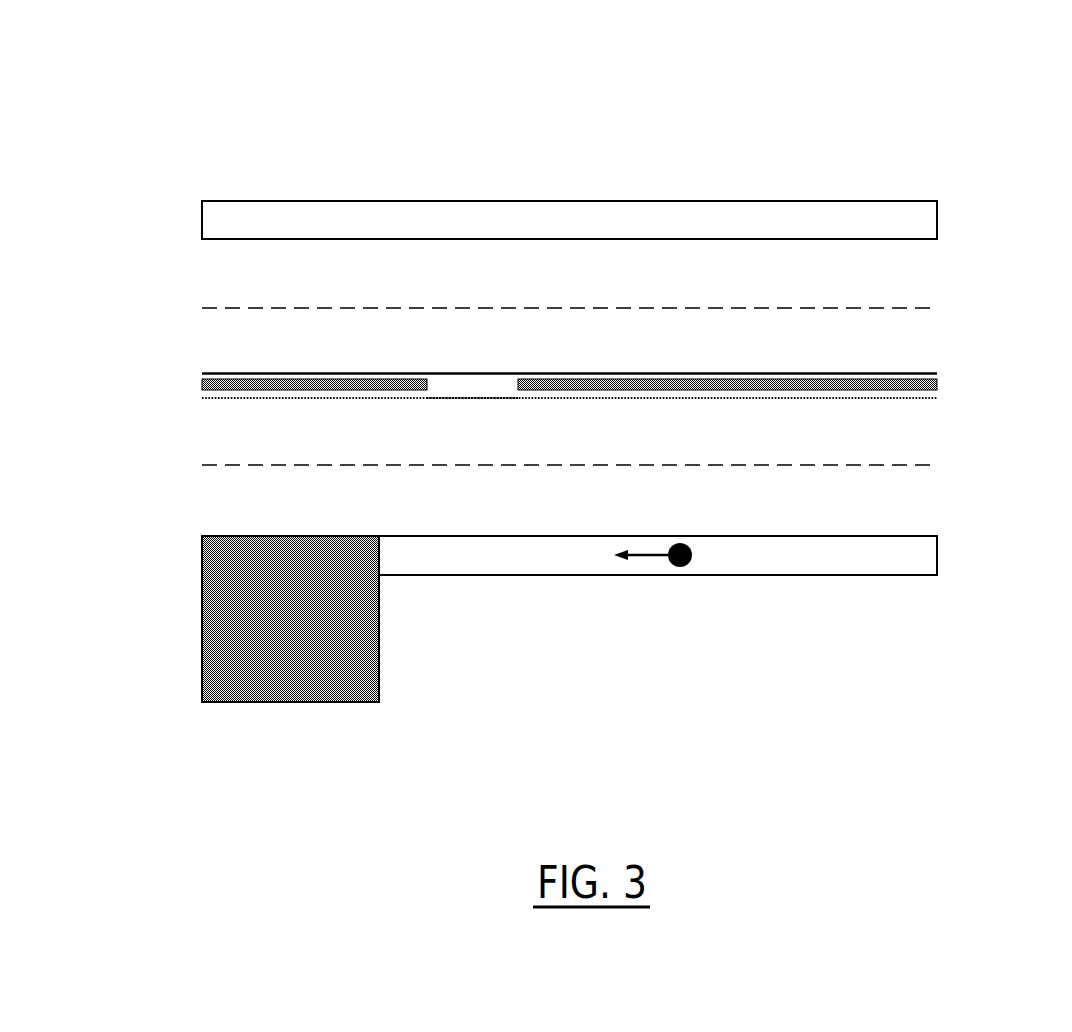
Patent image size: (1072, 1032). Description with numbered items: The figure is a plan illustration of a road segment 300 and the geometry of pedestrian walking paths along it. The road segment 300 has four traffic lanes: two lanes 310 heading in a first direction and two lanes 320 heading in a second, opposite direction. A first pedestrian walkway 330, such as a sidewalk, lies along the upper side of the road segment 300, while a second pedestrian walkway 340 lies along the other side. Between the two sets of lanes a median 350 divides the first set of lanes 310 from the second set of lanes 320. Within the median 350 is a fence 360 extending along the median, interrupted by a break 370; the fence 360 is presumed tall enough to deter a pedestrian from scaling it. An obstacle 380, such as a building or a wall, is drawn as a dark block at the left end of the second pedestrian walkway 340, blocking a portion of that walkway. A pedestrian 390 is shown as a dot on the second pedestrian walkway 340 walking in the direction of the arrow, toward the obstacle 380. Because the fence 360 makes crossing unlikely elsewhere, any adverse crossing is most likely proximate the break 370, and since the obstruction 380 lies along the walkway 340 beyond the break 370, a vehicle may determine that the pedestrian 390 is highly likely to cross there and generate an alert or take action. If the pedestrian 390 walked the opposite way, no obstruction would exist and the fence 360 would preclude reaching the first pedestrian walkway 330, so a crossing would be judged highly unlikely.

The road segment 300 is at (949, 75).
The lanes heading in a first direction 310 is at (210, 343).
The lanes heading in a second direction 320 is at (210, 503).
The first pedestrian walkway 330 is at (310, 210).
The second pedestrian walkway 340 is at (917, 553).
The median 350 is at (920, 368).
The fence 360 is at (935, 385).
The break in the fence 370 is at (472, 383).
The obstacle 380 is at (203, 612).
The pedestrian 390 is at (685, 567).